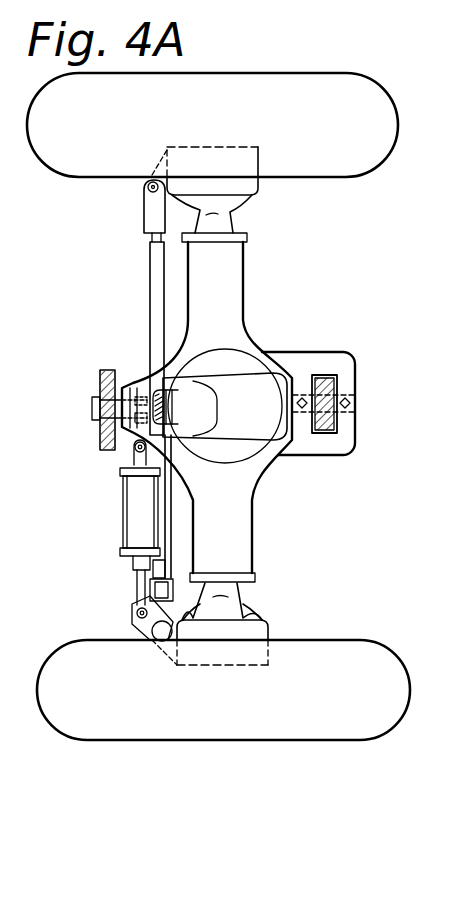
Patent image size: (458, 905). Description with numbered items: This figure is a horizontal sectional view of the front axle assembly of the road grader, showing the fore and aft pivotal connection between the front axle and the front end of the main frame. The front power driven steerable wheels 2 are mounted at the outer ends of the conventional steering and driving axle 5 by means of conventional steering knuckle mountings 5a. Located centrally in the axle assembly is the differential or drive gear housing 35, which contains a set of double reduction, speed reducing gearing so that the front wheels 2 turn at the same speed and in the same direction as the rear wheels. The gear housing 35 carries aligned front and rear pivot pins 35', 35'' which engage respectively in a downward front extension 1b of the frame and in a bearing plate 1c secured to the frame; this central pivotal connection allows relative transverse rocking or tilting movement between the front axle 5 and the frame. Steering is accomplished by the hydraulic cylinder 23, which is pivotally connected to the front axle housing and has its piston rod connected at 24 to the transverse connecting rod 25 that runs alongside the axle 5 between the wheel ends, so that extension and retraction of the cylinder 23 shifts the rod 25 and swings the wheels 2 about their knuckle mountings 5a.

The front power driven steerable wheels 2 is at (30, 118).
The front steering and driving axle 5 is at (240, 300).
The steering knuckle mounting 5a is at (238, 200).
The transverse connecting rod 25 is at (155, 271).
The differential or drive gear housing 35 is at (238, 393).
The front pivot pin 35' is at (361, 422).
The rear pivot pin 35'' is at (82, 410).
The downward front extension of the frame 1b is at (328, 383).
The bearing plate 1c is at (105, 372).
The hydraulic cylinder 23 is at (130, 508).
The piston rod connection 24 is at (138, 613).